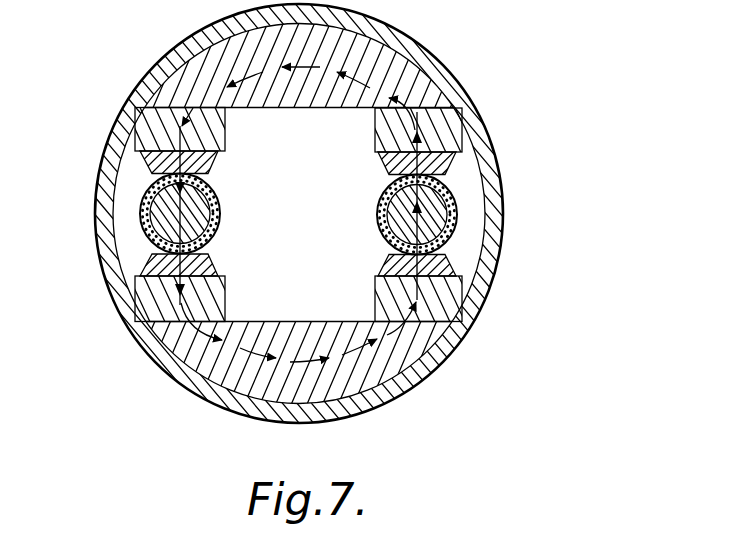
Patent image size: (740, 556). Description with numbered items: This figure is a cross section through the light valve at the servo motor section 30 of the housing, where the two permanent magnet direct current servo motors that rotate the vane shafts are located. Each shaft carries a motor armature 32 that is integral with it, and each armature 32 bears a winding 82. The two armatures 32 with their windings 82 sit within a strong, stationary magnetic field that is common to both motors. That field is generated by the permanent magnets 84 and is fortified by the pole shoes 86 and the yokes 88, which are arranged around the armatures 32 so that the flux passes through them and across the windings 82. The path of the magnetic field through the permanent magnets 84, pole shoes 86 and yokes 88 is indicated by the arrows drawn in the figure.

The servo motor section 30 is at (437, 352).
The motor armature 32 is at (203, 216).
The winding 82 is at (150, 238).
The permanent magnets 84 is at (395, 70).
The pole shoes 86 is at (205, 130).
The yokes 88 is at (157, 165).